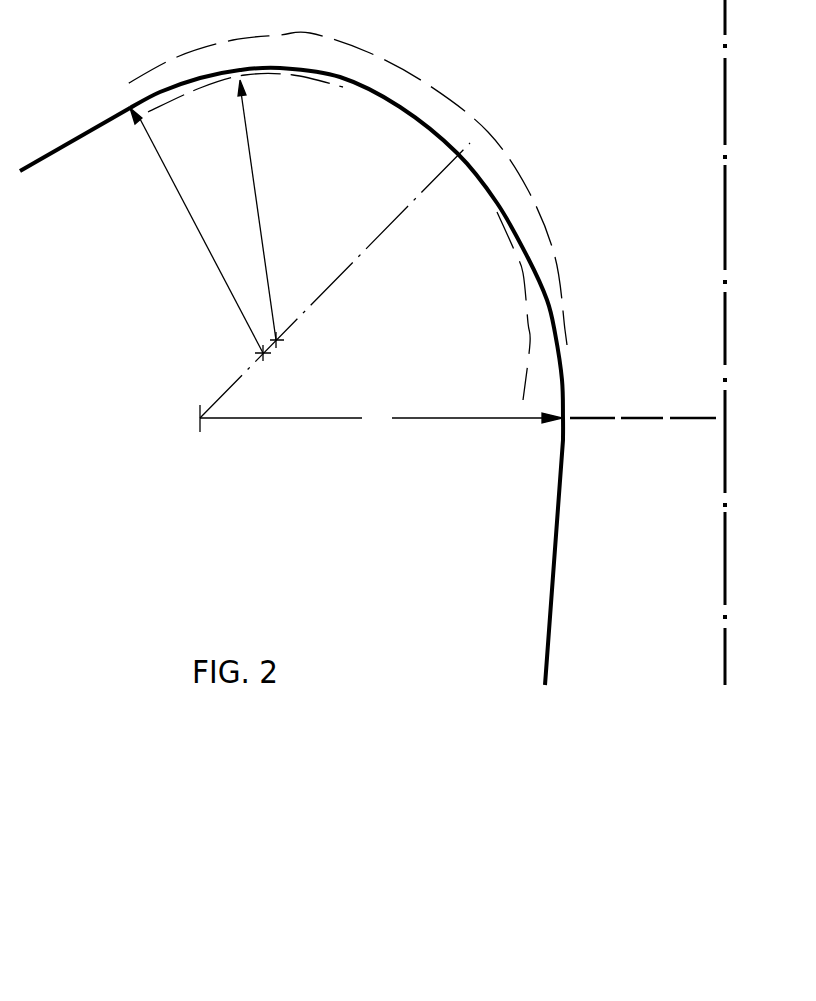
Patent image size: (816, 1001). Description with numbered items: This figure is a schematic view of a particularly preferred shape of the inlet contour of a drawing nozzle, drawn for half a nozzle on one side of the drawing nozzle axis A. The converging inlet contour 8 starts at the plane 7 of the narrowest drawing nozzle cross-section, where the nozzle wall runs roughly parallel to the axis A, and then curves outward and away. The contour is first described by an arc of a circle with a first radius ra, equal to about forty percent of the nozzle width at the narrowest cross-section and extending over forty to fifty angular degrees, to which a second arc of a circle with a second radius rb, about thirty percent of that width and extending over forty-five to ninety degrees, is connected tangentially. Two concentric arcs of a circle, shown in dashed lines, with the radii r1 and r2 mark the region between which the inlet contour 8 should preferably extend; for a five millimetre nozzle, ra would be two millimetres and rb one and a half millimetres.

The plane of the narrowest drawing nozzle cross-section 7 is at (645, 419).
The converging portion of the drawing nozzle 8 is at (546, 298).
The drawing nozzle axis A is at (724, 548).
The radius r1 is at (261, 214).
The radius r2 is at (278, 340).
The second radius rb is at (200, 234).
The first radius ra is at (381, 289).